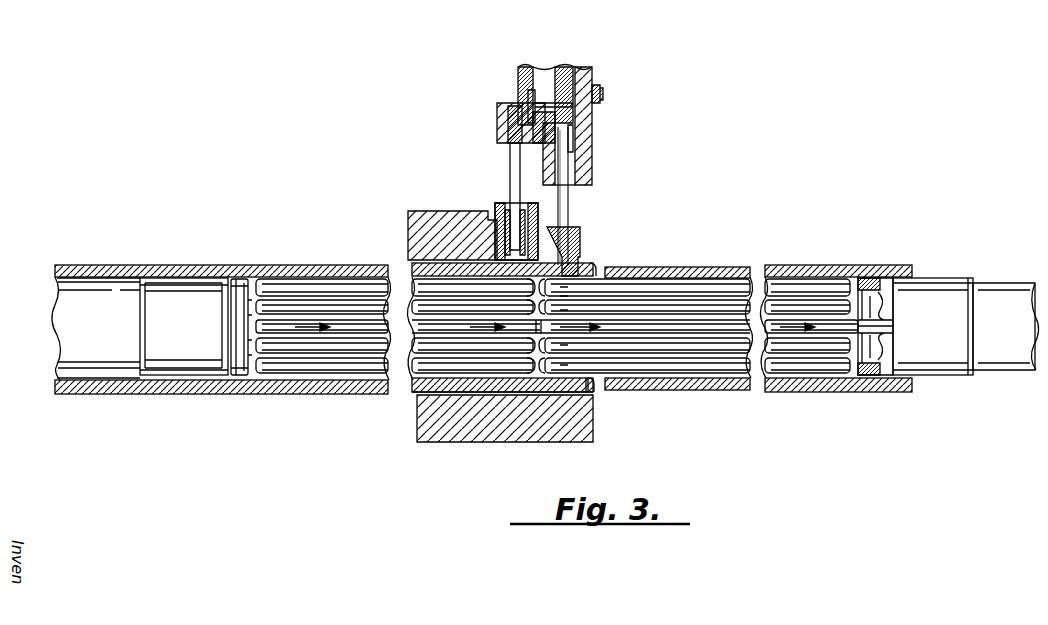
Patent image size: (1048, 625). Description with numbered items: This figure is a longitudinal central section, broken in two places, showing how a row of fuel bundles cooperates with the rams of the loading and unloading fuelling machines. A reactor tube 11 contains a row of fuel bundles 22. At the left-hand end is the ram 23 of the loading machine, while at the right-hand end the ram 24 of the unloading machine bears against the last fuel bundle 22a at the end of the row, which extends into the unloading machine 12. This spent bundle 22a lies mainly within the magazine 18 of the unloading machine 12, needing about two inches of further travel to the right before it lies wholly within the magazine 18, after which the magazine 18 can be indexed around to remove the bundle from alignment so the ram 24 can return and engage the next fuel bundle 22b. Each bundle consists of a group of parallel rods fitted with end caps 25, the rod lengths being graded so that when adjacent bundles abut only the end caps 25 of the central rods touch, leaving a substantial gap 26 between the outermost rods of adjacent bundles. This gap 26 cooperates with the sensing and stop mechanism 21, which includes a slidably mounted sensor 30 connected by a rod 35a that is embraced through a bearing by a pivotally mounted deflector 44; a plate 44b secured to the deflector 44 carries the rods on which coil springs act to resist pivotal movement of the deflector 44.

The reactor tube 11 is at (238, 278).
The unloading machine 12 is at (585, 437).
The magazine 18 is at (712, 272).
The sensing and stop mechanism 21 is at (567, 137).
The fuel bundles 22 is at (300, 285).
The last fuel bundle 22a is at (680, 285).
The next fuel bundle 22b is at (447, 283).
The ram of the loading machine 23 is at (170, 285).
The ram of the unloading machine 24 is at (940, 285).
The end caps 25 is at (540, 345).
The gap 26 is at (567, 287).
The sensor 30 is at (560, 265).
The rod 35a is at (570, 148).
The deflector 44 is at (600, 88).
The plate 44b is at (597, 94).